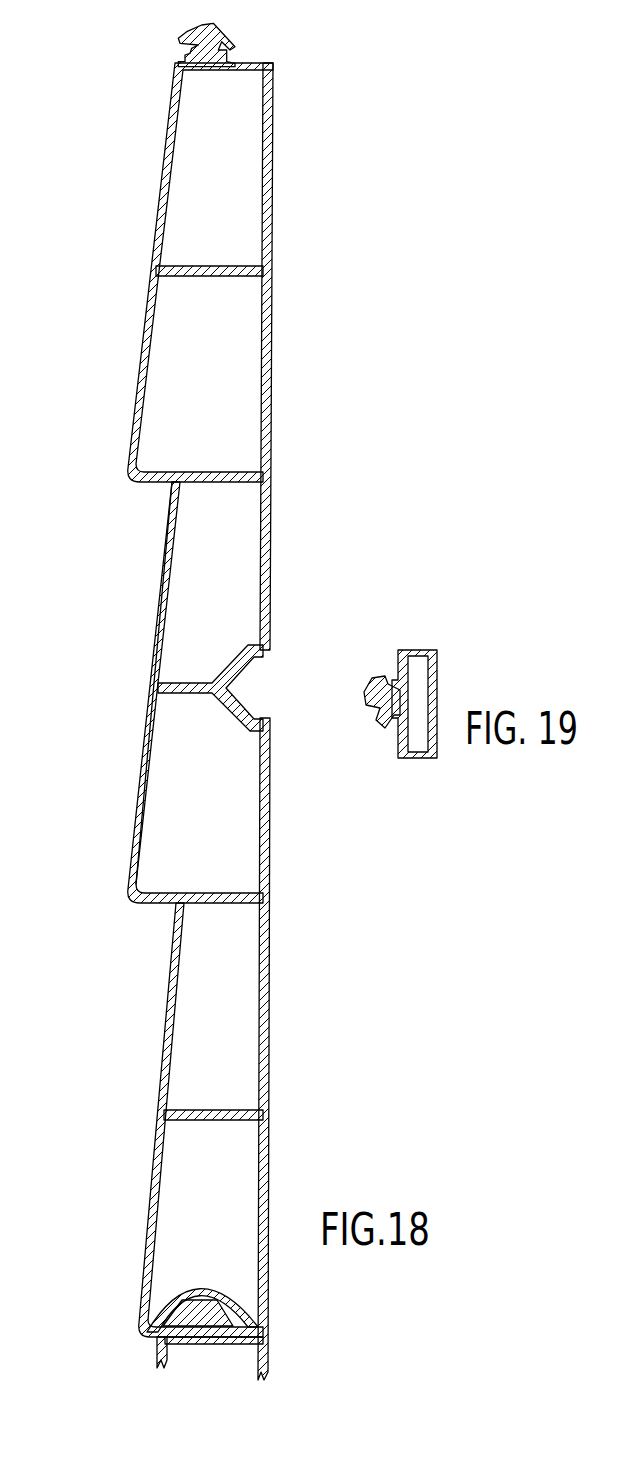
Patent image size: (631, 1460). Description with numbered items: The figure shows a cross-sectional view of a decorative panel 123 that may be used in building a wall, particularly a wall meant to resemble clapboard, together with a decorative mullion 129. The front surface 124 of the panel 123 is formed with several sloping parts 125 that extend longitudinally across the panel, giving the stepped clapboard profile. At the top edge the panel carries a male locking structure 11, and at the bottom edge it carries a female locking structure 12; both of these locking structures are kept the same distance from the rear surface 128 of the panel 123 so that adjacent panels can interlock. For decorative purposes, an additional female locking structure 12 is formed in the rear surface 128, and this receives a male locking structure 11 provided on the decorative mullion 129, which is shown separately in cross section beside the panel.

In FIG. 18, the male locking structure 11 is at (222, 33).
In FIG. 19, the male locking structure 11 is at (372, 718).
In FIG. 18, the female locking structure 12 is at (254, 690).
In FIG. 18, the decorative panel 123 is at (273, 282).
In FIG. 18, the front surface 124 is at (157, 620).
In FIG. 18, the sloping parts 125 is at (133, 382).
In FIG. 18, the rear surface 128 is at (272, 566).
In FIG. 19, the decorative mullion 129 is at (432, 648).